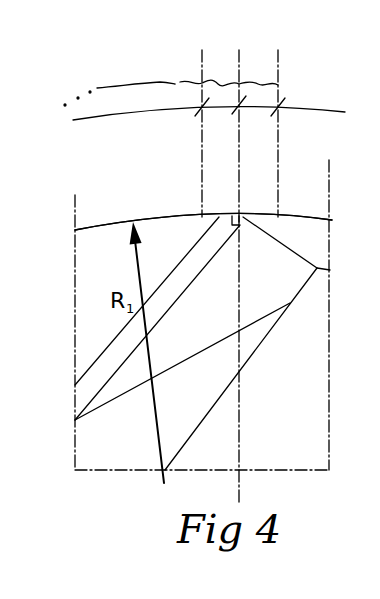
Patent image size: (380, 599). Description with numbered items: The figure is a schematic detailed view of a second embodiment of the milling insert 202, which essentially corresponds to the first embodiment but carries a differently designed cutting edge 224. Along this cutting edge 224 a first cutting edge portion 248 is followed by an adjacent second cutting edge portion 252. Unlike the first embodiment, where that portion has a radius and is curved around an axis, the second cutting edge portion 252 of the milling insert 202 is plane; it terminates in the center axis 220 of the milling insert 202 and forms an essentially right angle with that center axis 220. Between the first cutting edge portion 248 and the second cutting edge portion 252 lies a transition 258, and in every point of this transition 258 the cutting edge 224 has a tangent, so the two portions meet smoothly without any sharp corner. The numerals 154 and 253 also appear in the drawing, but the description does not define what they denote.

The liner 154 is at (0, 20).
The milling insert 202 is at (96, 240).
The center axis 220 is at (240, 186).
The cutting edge 224 is at (142, 210).
The first cutting edge portion 248 is at (180, 82).
The second cutting edge portion 252 is at (218, 78).
The third portion 253 is at (263, 74).
The transition 258 is at (194, 204).